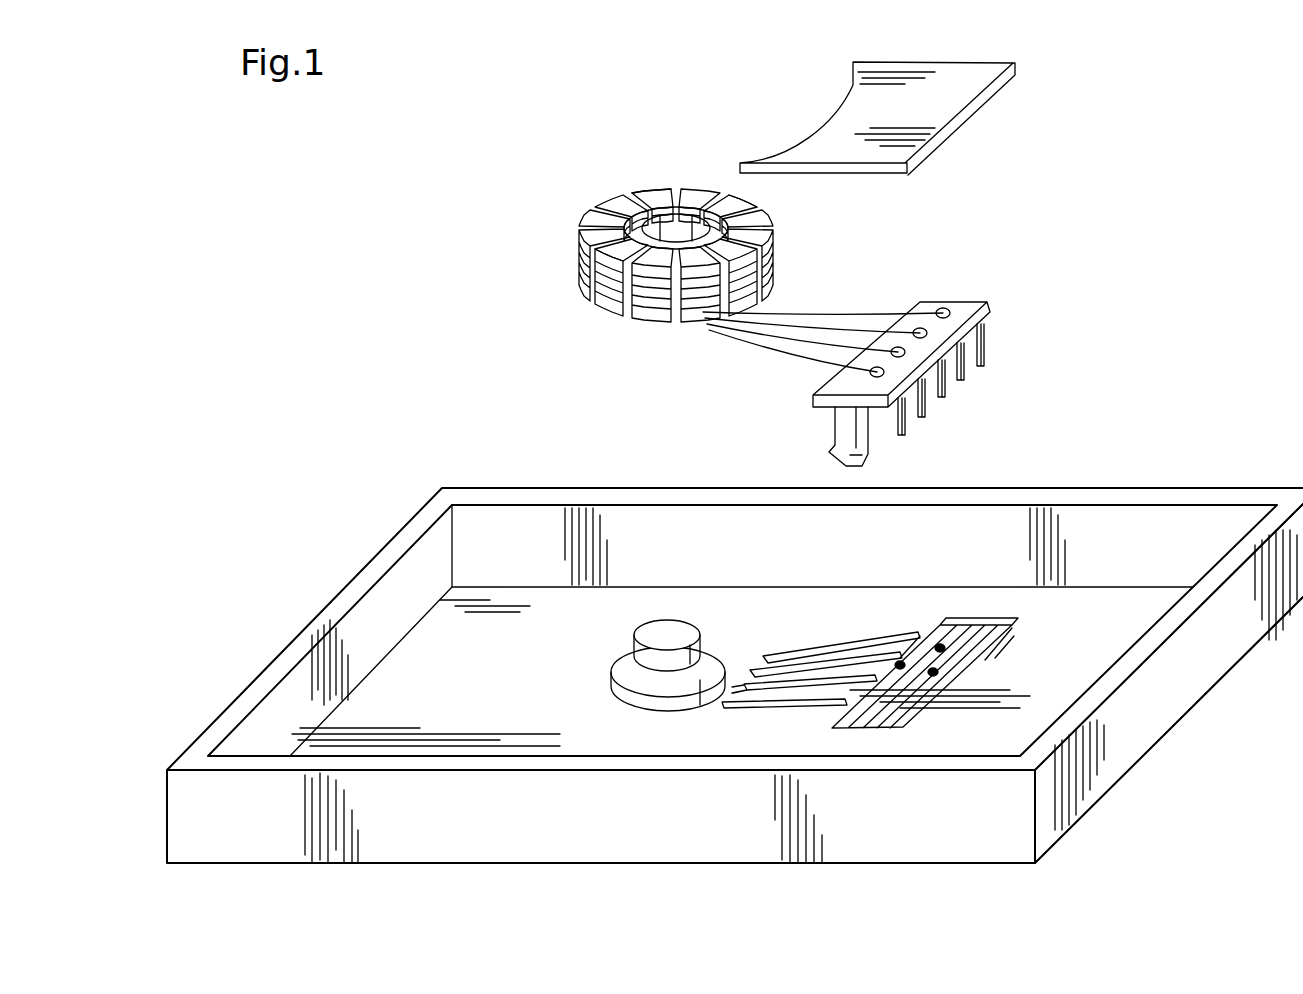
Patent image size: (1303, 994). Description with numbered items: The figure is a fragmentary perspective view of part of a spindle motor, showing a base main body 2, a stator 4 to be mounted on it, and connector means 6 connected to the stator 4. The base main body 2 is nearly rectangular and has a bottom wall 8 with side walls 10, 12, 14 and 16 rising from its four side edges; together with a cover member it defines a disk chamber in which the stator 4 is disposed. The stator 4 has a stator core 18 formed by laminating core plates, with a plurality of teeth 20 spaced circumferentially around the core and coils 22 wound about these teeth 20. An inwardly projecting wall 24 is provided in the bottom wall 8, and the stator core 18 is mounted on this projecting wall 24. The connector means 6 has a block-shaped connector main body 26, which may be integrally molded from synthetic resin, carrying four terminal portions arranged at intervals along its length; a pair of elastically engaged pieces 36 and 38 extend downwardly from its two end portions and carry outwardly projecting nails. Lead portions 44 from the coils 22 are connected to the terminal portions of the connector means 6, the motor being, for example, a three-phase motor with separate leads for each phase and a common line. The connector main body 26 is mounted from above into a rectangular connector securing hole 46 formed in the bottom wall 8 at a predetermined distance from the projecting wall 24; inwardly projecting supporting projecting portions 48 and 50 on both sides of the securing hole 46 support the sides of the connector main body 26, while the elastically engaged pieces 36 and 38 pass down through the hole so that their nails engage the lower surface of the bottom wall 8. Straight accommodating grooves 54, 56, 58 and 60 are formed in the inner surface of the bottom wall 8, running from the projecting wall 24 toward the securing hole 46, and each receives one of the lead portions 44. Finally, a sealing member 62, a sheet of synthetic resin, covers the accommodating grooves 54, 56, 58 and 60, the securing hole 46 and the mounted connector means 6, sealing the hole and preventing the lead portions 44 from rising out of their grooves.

The base main body 2 is at (436, 470).
The stator 4 is at (643, 188).
The connector means 6 is at (1048, 290).
The bottom wall 8 is at (425, 657).
The side wall 10 is at (990, 858).
The side wall 12 is at (1185, 690).
The side wall 14 is at (1205, 512).
The side wall 16 is at (280, 683).
The stator core 18 is at (582, 220).
The teeth 20 is at (718, 190).
The coils 22 is at (690, 190).
The projecting wall 24 is at (662, 620).
The connector main body 26 is at (950, 303).
The elastically engaged piece 36 is at (833, 441).
The elastically engaged piece 38 is at (985, 345).
The lead portions 44 is at (825, 332).
The connector securing hole 46 is at (960, 625).
The supporting projecting portion 48 is at (912, 666).
The supporting projecting portion 50 is at (988, 651).
The accommodating groove 54 is at (817, 704).
The accommodating groove 56 is at (745, 692).
The accommodating groove 58 is at (785, 668).
The accommodating groove 60 is at (823, 645).
The sealing member 62 is at (967, 87).